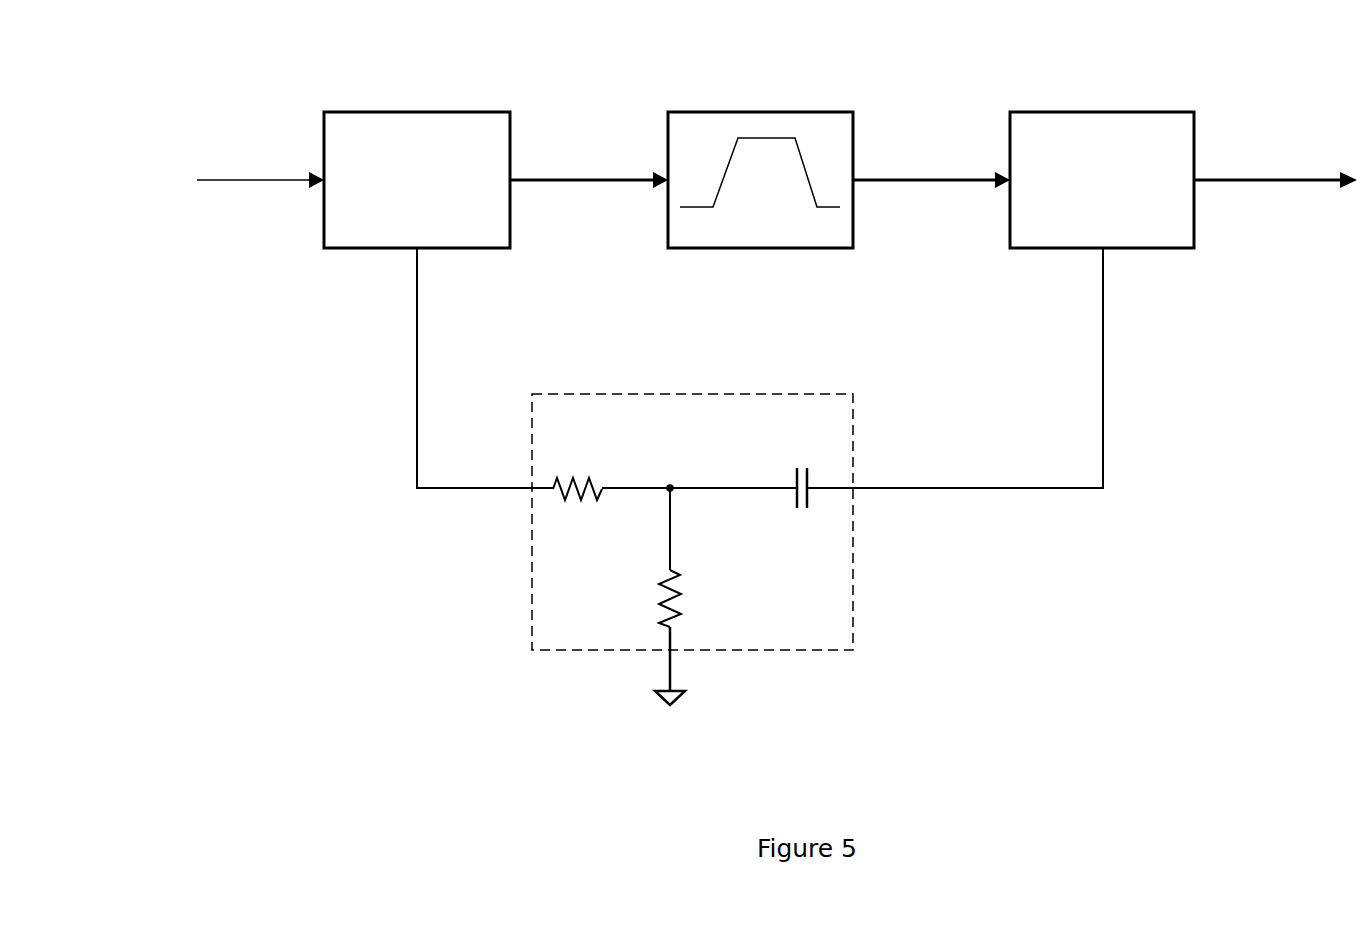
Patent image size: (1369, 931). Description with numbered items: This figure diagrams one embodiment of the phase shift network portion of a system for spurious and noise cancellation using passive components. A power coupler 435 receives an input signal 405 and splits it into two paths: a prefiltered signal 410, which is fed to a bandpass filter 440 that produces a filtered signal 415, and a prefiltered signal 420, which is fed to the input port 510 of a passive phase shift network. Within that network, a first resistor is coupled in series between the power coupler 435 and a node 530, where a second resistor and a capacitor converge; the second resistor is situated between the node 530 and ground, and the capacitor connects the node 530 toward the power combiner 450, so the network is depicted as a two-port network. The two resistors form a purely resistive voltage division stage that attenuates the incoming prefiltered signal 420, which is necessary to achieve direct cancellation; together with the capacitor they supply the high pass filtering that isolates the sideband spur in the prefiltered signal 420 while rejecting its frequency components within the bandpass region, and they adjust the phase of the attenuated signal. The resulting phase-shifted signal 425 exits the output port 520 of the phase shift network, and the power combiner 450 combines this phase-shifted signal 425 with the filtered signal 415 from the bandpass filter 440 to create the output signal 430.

The input signal 405 is at (227, 180).
The power coupler 435 is at (418, 110).
The prefiltered signal 410 is at (560, 177).
The bandpass filter 440 is at (757, 110).
The filtered signal 415 is at (894, 177).
The power combiner 450 is at (1088, 110).
The output signal 430 is at (1222, 180).
The prefiltered signal 420 is at (413, 386).
The input port 510 is at (665, 393).
The node 530 is at (670, 485).
The output port 520 is at (854, 495).
The phase-shifted signal 425 is at (976, 487).